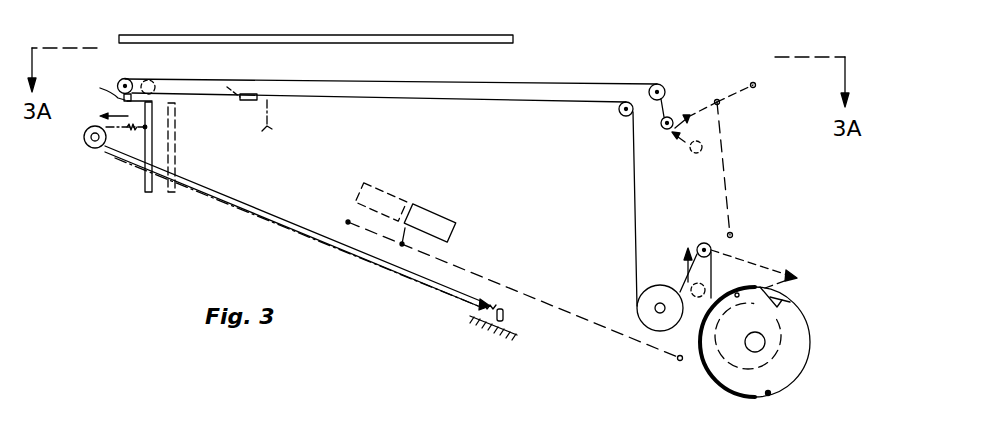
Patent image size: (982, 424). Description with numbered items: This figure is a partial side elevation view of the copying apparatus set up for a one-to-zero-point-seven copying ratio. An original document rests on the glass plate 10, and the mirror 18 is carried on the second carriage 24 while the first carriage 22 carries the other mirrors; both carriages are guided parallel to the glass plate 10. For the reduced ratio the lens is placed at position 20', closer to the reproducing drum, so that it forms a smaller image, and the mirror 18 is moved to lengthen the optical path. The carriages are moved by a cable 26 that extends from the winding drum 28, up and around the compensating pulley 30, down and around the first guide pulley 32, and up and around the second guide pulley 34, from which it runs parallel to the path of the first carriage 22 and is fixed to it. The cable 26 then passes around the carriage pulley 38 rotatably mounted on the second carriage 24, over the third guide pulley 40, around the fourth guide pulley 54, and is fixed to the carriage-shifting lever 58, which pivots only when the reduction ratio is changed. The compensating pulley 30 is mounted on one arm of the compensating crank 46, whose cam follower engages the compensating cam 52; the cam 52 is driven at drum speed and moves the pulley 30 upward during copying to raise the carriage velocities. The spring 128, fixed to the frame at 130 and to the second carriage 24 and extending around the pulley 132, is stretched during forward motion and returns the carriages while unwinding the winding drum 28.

The glass plate 10 is at (470, 36).
The mirror 18 is at (150, 182).
The lens position 20' is at (514, 272).
The first carriage 22 is at (271, 125).
The second carriage 24 is at (98, 93).
The cable 26 is at (541, 80).
The winding drum 28 is at (808, 363).
The compensating pulley 30 is at (707, 238).
The first guide pulley 32 is at (648, 333).
The second guide pulley 34 is at (622, 113).
The carriage pulley 38 is at (120, 78).
The third guide pulley 40 is at (660, 83).
The compensating crank 46 is at (770, 264).
The compensating cam 52 is at (790, 300).
The fourth guide pulley 54 is at (664, 129).
The carriage-shifting lever 58 is at (750, 90).
The spring 128 is at (262, 220).
The spring fixing point 130 is at (513, 318).
The pulley 132 is at (90, 146).